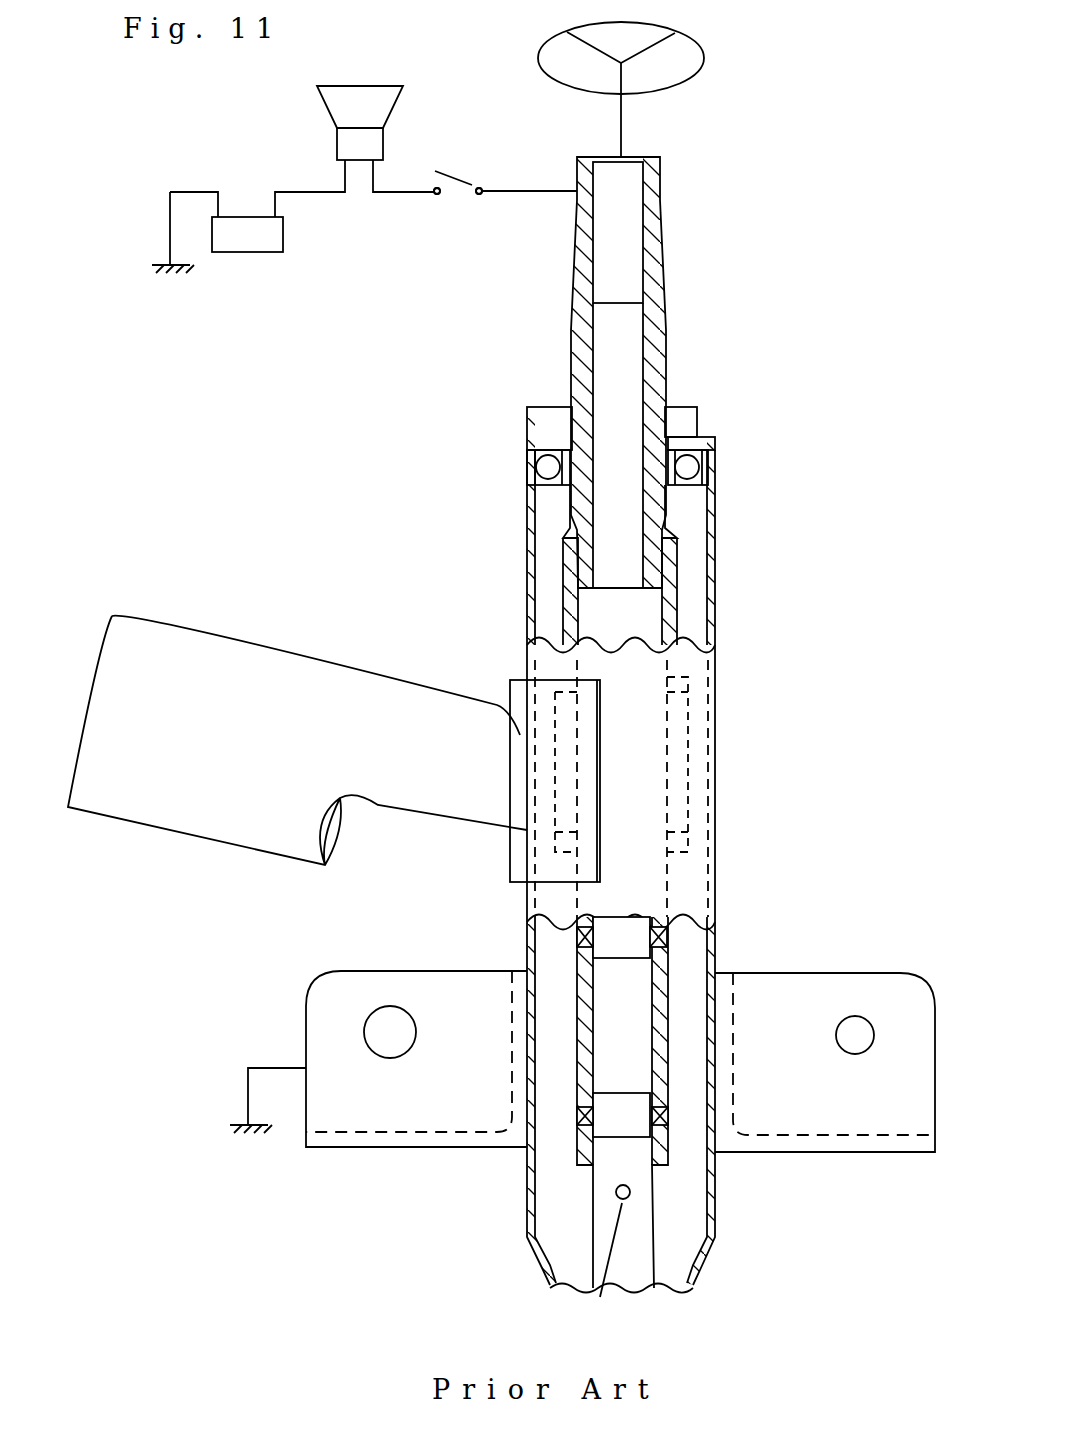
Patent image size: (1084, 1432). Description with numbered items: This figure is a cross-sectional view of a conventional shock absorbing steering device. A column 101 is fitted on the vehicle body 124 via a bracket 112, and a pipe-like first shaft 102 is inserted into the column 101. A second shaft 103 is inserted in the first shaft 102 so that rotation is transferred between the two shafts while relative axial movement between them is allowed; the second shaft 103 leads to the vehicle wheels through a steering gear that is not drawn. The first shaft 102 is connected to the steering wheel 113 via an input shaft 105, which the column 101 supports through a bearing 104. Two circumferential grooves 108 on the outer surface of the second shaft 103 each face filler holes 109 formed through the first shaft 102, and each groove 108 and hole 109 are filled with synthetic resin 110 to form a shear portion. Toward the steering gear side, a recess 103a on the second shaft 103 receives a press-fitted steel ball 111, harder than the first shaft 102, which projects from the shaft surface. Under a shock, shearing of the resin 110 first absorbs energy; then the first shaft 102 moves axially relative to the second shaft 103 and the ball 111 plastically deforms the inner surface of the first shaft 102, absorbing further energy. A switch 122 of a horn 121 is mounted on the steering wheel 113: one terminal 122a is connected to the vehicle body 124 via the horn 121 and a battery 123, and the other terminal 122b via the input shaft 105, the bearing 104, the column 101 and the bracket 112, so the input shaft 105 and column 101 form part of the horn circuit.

The column 101 is at (715, 572).
The first shaft 102 is at (675, 615).
The second shaft 103 is at (635, 1242).
The recess 103a is at (607, 1269).
The bearing 104 is at (692, 467).
The input shaft 105 is at (660, 290).
The circumferential groove 108 is at (628, 952).
The filler hole 109 is at (650, 933).
The synthetic resin 110 is at (577, 937).
The steel ball 111 is at (631, 1192).
The bracket 112 is at (318, 1005).
The steering wheel 113 is at (700, 72).
The horn 121 is at (403, 100).
The switch 122 is at (467, 182).
The terminal 122a is at (435, 195).
The terminal 122b is at (481, 195).
The battery 123 is at (268, 252).
The vehicle body 124 is at (250, 1130).